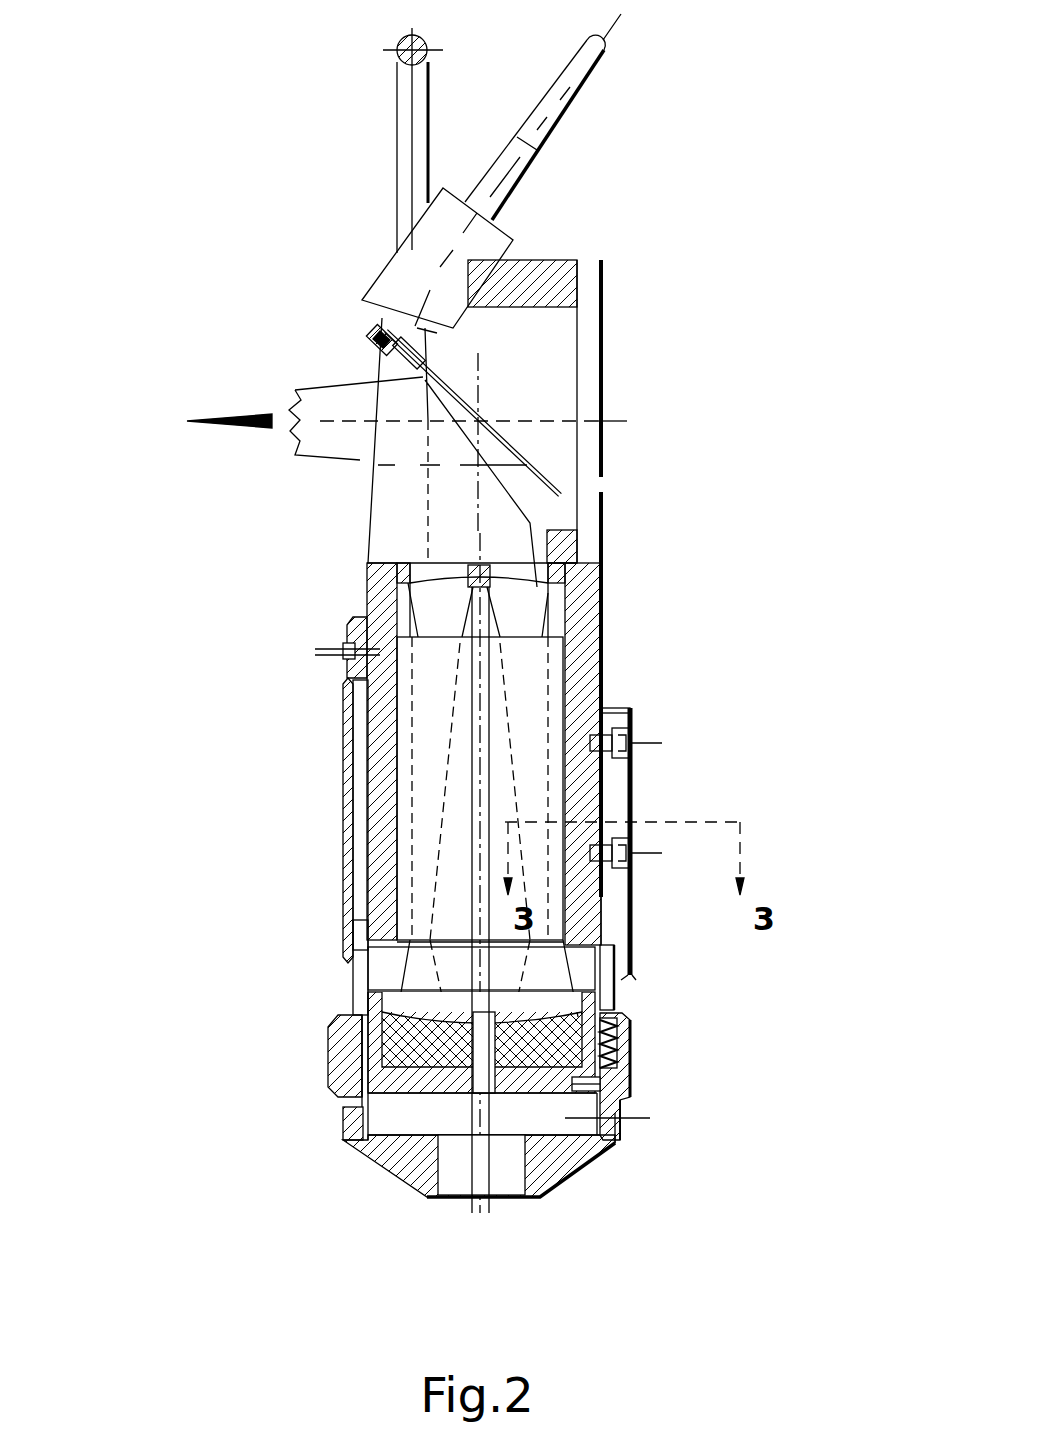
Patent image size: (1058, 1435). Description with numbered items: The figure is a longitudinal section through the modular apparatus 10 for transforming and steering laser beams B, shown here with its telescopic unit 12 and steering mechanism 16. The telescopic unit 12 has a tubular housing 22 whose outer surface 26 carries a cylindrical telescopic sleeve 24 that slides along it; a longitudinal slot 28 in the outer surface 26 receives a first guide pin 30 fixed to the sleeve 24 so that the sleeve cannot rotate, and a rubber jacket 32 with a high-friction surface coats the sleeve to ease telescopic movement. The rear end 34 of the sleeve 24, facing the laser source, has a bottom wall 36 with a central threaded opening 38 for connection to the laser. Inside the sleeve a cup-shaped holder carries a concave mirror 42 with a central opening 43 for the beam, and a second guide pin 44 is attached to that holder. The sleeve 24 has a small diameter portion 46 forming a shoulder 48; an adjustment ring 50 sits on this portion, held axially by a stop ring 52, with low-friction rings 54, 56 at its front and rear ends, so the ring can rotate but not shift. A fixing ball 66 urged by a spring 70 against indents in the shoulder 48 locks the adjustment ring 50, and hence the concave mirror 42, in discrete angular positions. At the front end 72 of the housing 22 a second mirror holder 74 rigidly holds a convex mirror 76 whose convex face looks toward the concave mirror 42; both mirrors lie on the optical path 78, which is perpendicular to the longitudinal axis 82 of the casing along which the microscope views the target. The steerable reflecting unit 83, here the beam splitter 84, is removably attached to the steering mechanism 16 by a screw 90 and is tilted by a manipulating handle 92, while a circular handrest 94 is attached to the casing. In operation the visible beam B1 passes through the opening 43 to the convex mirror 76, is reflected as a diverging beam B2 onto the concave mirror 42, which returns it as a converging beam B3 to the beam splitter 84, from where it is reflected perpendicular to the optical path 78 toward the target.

The modular apparatus for transforming and steering beams 10 is at (617, 593).
The telescopic unit 12 is at (325, 1028).
The steering mechanism 16 is at (521, 232).
The tubular housing 22 is at (589, 929).
The cylindrical telescopic sleeve 24 is at (360, 743).
The outer surface 26 is at (603, 691).
The longitudinal slot 28 is at (352, 645).
The first guide pin 30 is at (372, 688).
The rubber jacket 32 is at (343, 760).
The rear end 34 is at (580, 1182).
The bottom wall 36 is at (388, 1150).
The central threaded opening 38 is at (441, 1172).
The concave mirror 42 is at (395, 1028).
The central opening 43 is at (470, 903).
The second guide pin 44 is at (632, 1097).
The small diameter portion 46 is at (362, 1072).
The shoulder 48 is at (360, 930).
The adjustment ring 50 is at (340, 1050).
The stop ring 52 is at (617, 1142).
The low-friction ring 54 is at (350, 1018).
The low-friction ring 56 is at (350, 1104).
The fixing ball 66 is at (632, 1023).
The spring 70 is at (632, 1068).
The front end 72 is at (604, 481).
The second mirror holder 74 is at (402, 577).
The convex mirror 76 is at (490, 590).
The optical path 78 is at (483, 962).
The longitudinal axis 82 is at (627, 421).
The steerable reflecting unit 83 is at (462, 376).
The beam splitter 84 is at (458, 403).
The screw 90 is at (380, 335).
The manipulating handle 92 is at (570, 86).
The circular handrest 94 is at (413, 122).
The laser beams B is at (479, 1216).
The visible beam B1 is at (468, 900).
The projection lines B2 is at (515, 730).
The converging beam lines B3 is at (530, 527).